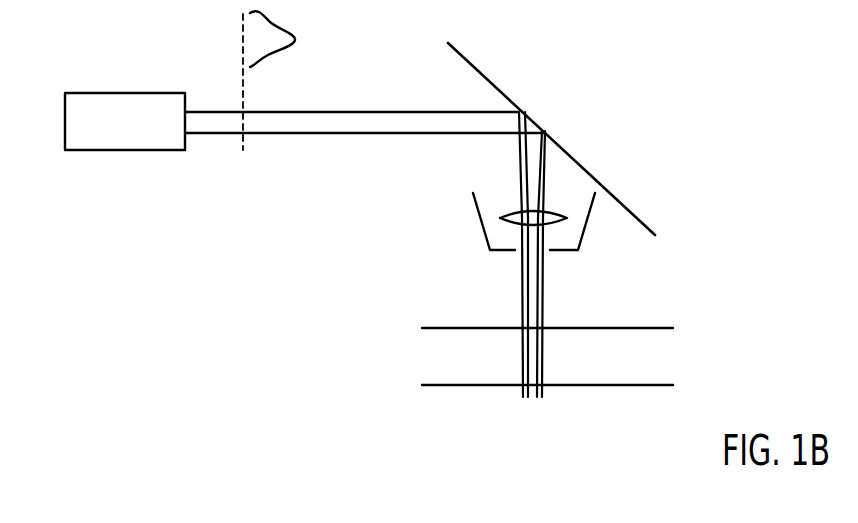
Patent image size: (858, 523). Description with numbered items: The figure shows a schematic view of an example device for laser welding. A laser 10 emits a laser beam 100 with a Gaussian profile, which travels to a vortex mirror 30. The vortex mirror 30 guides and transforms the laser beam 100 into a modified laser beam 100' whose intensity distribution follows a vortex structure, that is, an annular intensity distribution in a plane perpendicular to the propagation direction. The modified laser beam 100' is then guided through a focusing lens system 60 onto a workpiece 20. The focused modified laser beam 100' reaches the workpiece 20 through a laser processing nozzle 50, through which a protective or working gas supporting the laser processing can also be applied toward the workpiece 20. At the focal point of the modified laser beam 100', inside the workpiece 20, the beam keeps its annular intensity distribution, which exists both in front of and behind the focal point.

The laser 10 is at (138, 140).
The laser beam 100 is at (364, 80).
The vortex mirror 30 is at (481, 69).
The modified laser beam 100' is at (488, 254).
The focusing lens system 60 is at (553, 210).
The laser processing nozzle 50 is at (583, 237).
The workpiece 20 is at (648, 342).